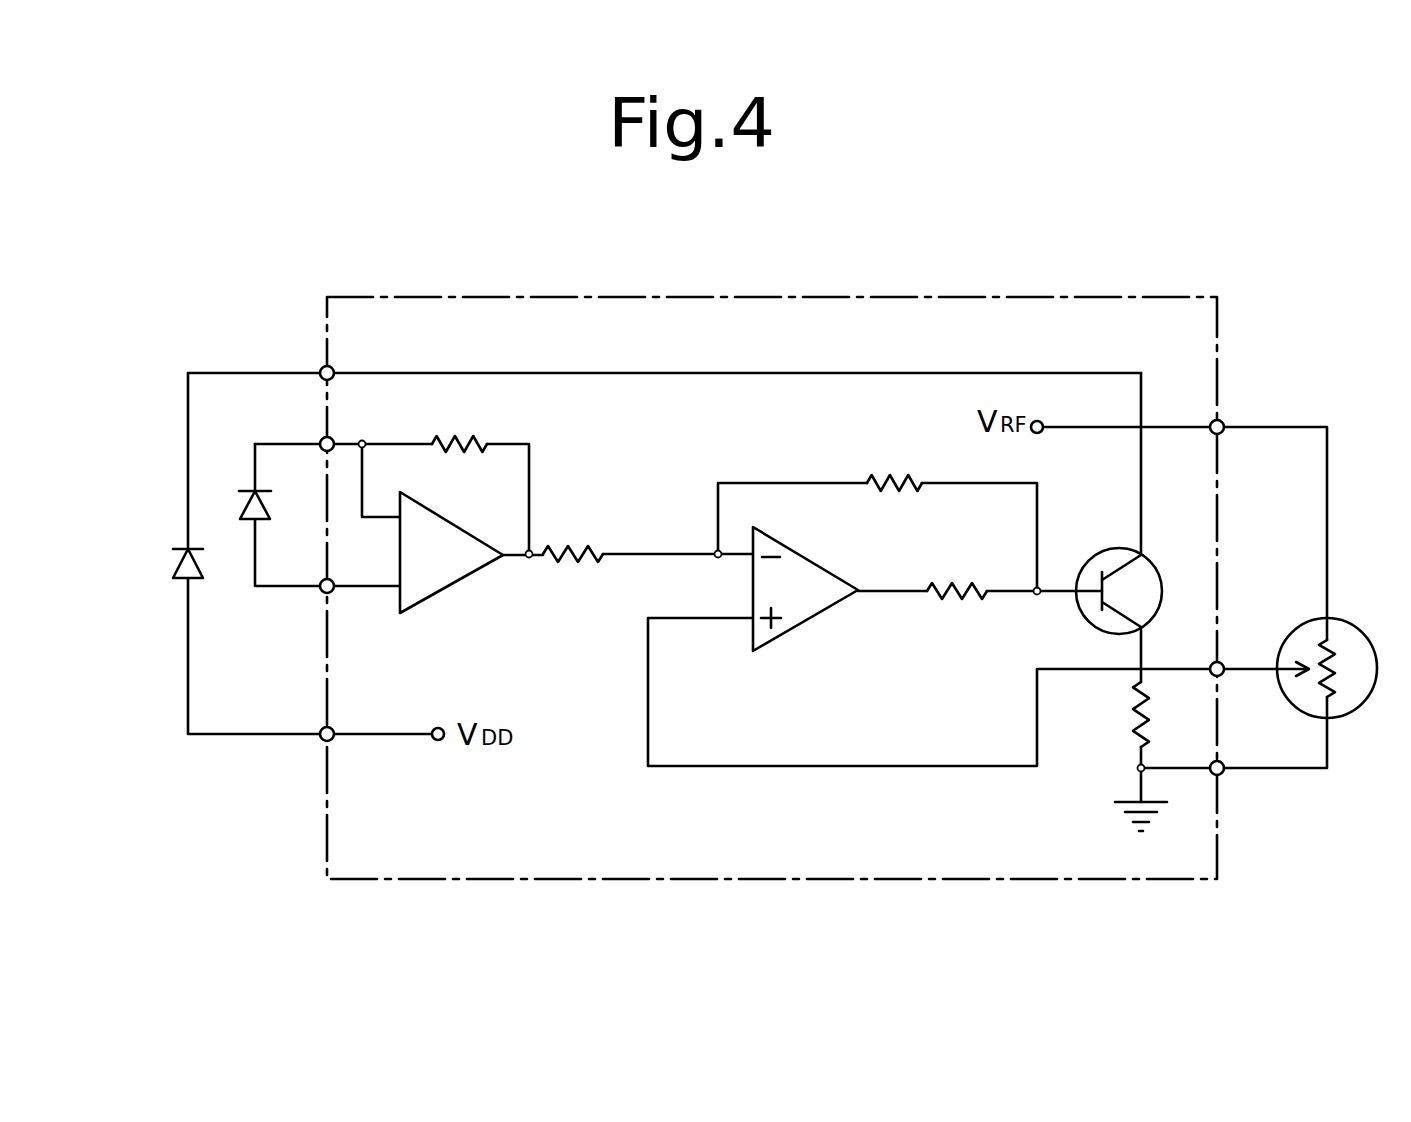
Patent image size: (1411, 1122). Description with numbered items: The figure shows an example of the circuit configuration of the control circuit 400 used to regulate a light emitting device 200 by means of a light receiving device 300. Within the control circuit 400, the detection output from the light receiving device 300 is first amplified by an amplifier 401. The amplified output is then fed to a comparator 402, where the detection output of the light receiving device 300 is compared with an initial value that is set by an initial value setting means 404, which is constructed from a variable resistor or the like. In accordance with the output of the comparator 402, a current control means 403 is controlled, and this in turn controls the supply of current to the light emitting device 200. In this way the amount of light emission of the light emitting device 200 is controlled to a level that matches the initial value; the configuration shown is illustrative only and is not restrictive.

The control circuit 400 is at (750, 297).
The light emitting device 200 is at (177, 565).
The light receiving device 300 is at (247, 497).
The amplifier 401 is at (452, 588).
The comparator 402 is at (815, 618).
The current control means 403 is at (1163, 578).
The initial value setting means 404 is at (1352, 618).